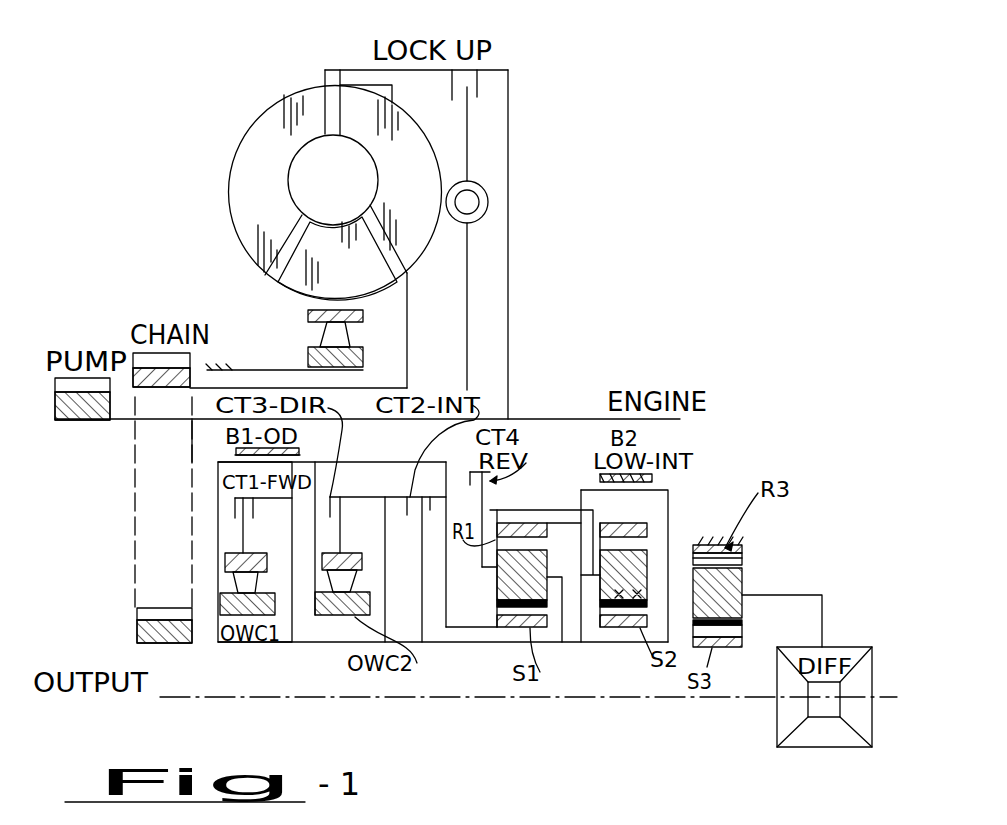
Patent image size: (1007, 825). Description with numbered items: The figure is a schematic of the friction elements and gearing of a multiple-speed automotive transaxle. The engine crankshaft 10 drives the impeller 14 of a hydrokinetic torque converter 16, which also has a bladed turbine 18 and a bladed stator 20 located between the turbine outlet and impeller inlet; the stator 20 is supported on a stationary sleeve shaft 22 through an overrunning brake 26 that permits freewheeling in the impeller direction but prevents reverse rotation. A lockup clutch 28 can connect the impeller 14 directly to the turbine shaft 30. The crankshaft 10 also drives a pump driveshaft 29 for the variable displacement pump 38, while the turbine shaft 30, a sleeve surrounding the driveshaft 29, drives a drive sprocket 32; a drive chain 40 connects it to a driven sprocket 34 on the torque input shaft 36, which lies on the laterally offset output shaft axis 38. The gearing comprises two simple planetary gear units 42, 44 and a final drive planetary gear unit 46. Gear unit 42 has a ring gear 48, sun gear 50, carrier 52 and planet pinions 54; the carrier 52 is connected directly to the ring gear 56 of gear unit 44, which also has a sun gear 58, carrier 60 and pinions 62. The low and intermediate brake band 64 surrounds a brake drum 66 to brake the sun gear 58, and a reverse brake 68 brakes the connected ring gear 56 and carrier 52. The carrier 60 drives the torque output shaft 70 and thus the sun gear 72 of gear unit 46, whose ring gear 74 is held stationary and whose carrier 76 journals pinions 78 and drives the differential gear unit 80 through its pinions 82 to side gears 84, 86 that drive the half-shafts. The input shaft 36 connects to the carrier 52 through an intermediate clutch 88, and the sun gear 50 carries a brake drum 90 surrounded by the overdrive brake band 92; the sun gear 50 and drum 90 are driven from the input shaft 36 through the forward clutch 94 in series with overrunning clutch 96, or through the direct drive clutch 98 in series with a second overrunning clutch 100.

The crankshaft 10 is at (528, 418).
The impeller 14 is at (272, 190).
The hydrokinetic torque converter 16 is at (339, 185).
The bladed turbine 18 is at (422, 190).
The bladed stator 20 is at (363, 280).
The stationary sleeve shaft 22 is at (327, 329).
The overrunning brake 26 is at (340, 315).
The torque converter lockup clutch 28 is at (487, 97).
The pump driveshaft 29 is at (207, 422).
The turbine shaft 30 is at (433, 386).
The drive sprocket 32 is at (160, 390).
The driven sprocket 34 is at (137, 632).
The torque input shaft 36 is at (220, 614).
The variable displacement pump 38 is at (97, 436).
The drive chain 40 is at (135, 551).
The simple planetary gear unit 42 is at (543, 512).
The simple planetary gear unit 44 is at (652, 522).
The final drive planetary gear unit 46 is at (767, 598).
The ring gear 48 is at (503, 520).
The sun gear 50 is at (505, 628).
The planetary carrier 52 is at (555, 570).
The planet pinions 54 is at (497, 601).
The ring gear 56 is at (640, 508).
The sun gear 58 is at (593, 650).
The planetary carrier 60 is at (592, 645).
The planet pinions 62 is at (585, 578).
The low and intermediate brake band 64 is at (650, 481).
The brake drum 66 is at (668, 530).
The reverse brake 68 is at (518, 480).
The torque output shaft 70 is at (644, 726).
The sun gear 72 is at (733, 648).
The ring gear 74 is at (748, 550).
The carrier 76 is at (813, 595).
The pinions 78 is at (730, 585).
The differential gear unit 80 is at (796, 685).
The pinions 82 is at (853, 648).
The side gear 84 is at (777, 718).
The side gear 86 is at (865, 723).
The intermediate speed ratio clutch 88 is at (428, 505).
The brake drum 90 is at (368, 462).
The overdrive brake band 92 is at (217, 463).
The forward clutch 94 is at (233, 507).
The overrunning clutch 96 is at (237, 583).
The direct drive clutch 98 is at (380, 533).
The second overrunning clutch 100 is at (327, 615).